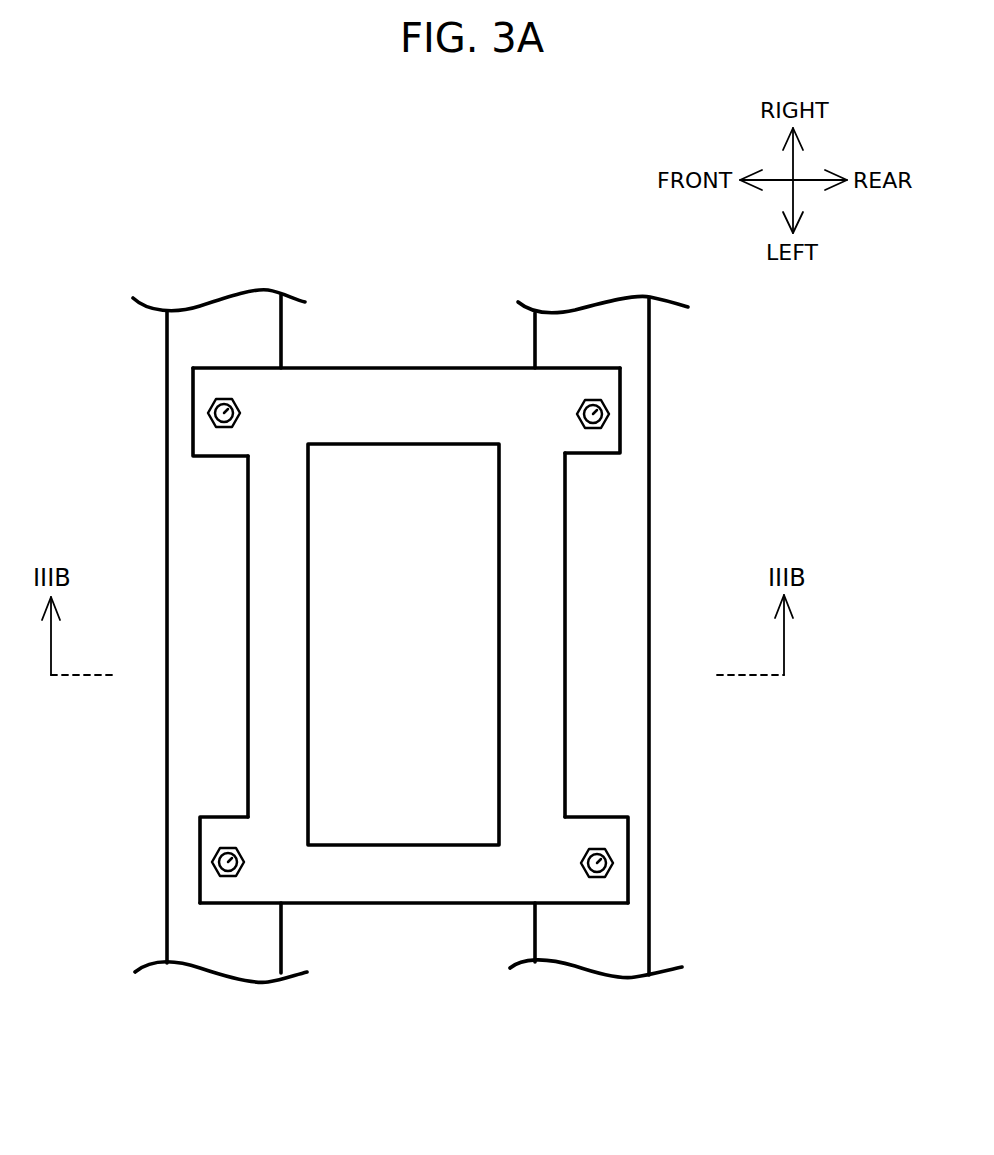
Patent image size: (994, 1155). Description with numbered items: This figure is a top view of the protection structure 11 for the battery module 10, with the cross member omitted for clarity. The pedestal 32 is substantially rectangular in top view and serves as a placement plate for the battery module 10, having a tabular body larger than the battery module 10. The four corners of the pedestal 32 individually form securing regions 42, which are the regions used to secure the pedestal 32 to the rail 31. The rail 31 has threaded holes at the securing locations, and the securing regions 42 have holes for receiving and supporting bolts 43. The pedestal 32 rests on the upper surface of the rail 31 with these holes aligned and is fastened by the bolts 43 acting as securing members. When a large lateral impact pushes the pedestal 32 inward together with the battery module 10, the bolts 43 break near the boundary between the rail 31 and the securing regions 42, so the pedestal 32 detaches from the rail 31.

The battery module 10 is at (345, 607).
The protection structure 11 is at (405, 230).
The rail 31 is at (213, 325).
The pedestal 32 is at (535, 630).
The securing region 42 is at (217, 442).
The bolt 43 is at (210, 405).